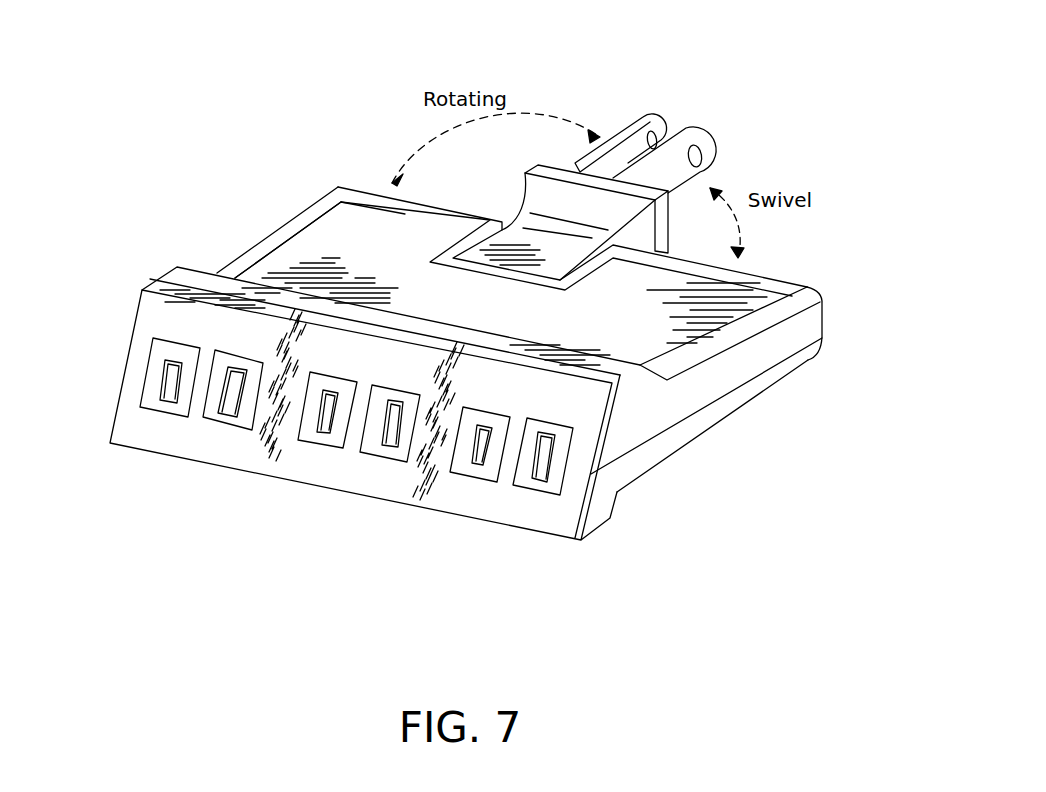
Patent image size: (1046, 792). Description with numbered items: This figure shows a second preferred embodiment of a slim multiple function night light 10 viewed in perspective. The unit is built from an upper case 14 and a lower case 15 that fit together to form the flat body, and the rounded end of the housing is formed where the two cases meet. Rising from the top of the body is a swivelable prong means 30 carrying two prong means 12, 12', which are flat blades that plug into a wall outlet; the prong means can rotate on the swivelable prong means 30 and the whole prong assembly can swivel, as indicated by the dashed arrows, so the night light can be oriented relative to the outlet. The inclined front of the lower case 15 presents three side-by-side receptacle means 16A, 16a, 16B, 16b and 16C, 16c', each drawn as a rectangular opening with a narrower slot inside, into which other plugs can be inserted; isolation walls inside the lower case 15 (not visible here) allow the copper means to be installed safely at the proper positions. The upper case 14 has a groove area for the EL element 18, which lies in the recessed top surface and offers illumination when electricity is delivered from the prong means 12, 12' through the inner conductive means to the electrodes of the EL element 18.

The multi-outlet power adapter 10 is at (275, 248).
The prong means 12 is at (689, 124).
The prong means 12' is at (621, 91).
The upper case 14 is at (815, 292).
The lower case 15 is at (823, 340).
The receptacle means 16A is at (537, 480).
The receptacle means 16a is at (478, 463).
The receptacle means 16B is at (385, 443).
The receptacle means 16b is at (325, 432).
The receptacle means 16C is at (228, 413).
The receptacle means 16c' is at (136, 430).
The EL element 18 is at (330, 232).
The swivelable prong means 30 is at (548, 172).